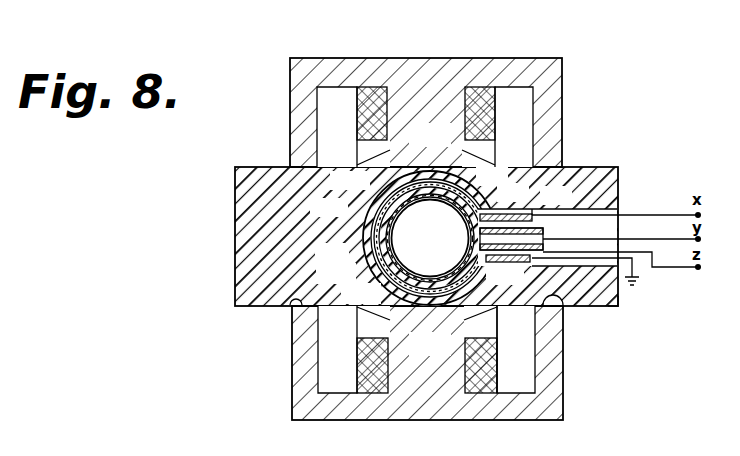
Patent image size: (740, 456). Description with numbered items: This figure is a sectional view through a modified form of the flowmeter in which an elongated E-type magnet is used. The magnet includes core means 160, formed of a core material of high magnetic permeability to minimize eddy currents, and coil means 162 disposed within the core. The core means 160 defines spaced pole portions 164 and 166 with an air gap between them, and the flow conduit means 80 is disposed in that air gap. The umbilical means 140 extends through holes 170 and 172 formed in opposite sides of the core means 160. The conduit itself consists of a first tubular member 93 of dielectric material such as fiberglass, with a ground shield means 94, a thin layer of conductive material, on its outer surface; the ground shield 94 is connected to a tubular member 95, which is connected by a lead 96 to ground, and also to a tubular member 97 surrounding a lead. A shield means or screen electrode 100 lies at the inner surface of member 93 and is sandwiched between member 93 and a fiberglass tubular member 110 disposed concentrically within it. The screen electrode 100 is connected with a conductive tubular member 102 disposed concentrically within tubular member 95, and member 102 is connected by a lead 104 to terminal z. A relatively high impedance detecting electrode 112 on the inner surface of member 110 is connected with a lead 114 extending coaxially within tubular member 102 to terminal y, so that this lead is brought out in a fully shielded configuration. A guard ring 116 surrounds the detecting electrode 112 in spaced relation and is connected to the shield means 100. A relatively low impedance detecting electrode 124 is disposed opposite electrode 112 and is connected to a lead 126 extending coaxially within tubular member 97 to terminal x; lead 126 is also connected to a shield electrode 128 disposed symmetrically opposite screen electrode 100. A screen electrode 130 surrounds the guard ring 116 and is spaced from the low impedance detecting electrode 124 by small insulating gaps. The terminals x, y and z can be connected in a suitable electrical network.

The core means 160 is at (546, 54).
The coil means 162 is at (500, 122).
The pole portion 164 is at (447, 144).
The pole portion 166 is at (447, 353).
The umbilical means 140 is at (588, 164).
The shield means or screen electrode 100 is at (377, 188).
The first tubular member 93 is at (463, 190).
The ground shield means 94 is at (487, 206).
The tubular member 95 is at (569, 203).
The tubular member 97 is at (392, 232).
The lead 126 is at (372, 218).
The shield electrode 128 is at (378, 266).
The screen electrode 130 is at (400, 285).
The relatively low impedance detecting electrode 124 is at (430, 238).
The guard ring 116 is at (430, 238).
The relatively high impedance detecting electrode 112 is at (430, 238).
The conductive tubular member 102 is at (545, 234).
The lead 114 is at (641, 240).
The lead 104 is at (656, 268).
The tubular member 110 is at (476, 279).
The flow conduit means 80 is at (498, 309).
The lead 96 is at (614, 303).
The hole 170 is at (568, 307).
The hole 172 is at (284, 307).